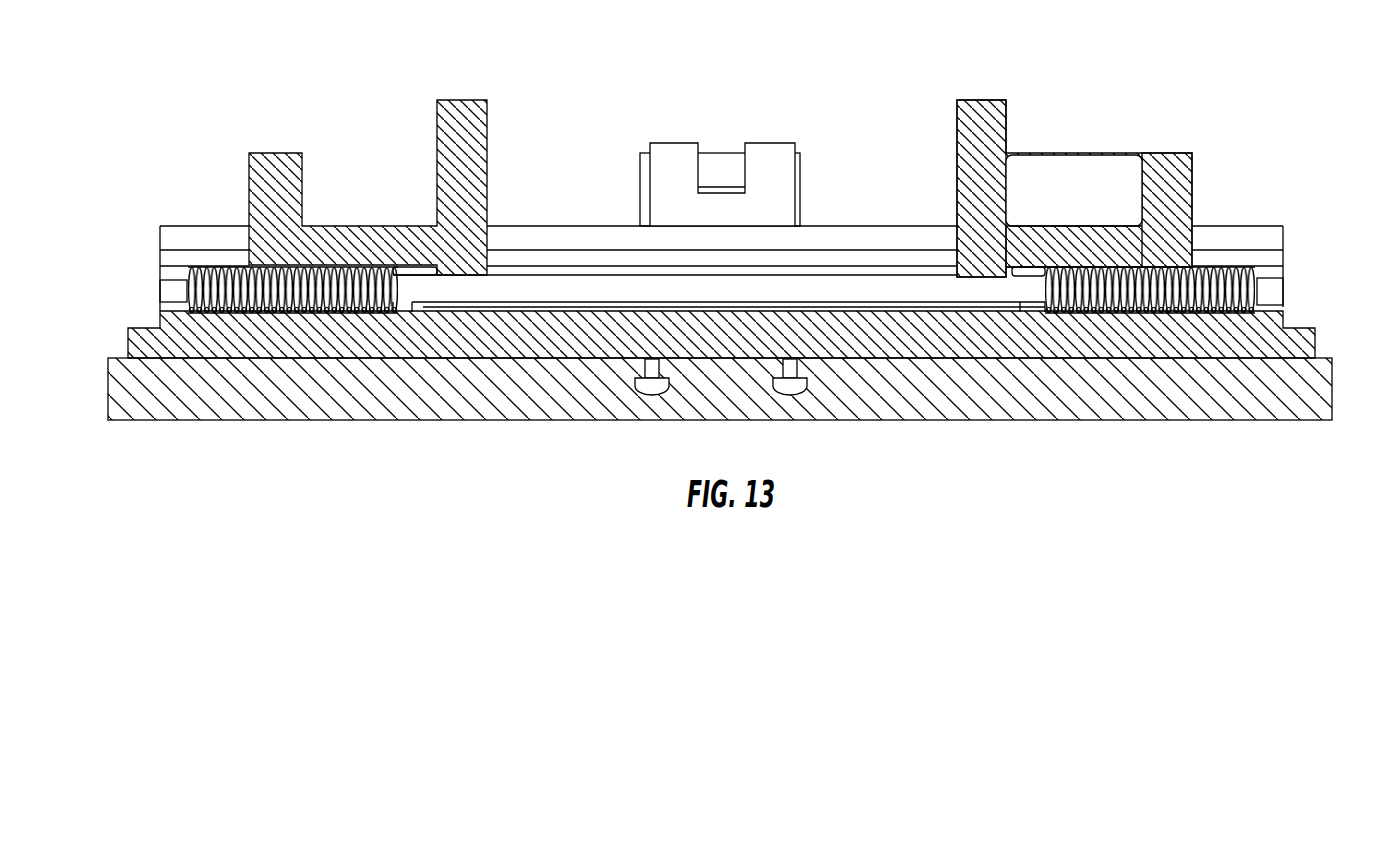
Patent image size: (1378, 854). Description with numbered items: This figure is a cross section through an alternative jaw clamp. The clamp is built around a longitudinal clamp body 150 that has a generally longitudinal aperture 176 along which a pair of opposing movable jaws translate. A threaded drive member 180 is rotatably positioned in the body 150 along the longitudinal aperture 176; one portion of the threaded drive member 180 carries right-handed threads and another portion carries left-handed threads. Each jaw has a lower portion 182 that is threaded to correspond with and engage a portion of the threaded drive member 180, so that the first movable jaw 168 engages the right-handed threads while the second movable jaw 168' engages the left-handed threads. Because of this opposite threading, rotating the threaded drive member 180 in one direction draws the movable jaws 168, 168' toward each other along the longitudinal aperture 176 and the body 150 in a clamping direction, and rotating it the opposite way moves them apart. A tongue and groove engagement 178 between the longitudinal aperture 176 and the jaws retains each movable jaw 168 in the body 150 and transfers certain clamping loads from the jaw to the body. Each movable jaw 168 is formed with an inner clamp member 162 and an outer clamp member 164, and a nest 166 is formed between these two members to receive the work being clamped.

The clamp body 150 is at (300, 340).
The inner clamp member 162 is at (957, 127).
The outer clamp member 164 is at (1165, 162).
The nest 166 is at (1082, 153).
The movable jaw 168 is at (996, 149).
The second movable jaw 168' is at (408, 176).
The longitudinal aperture 176 is at (1270, 240).
The tongue and groove engagement 178 is at (1228, 255).
The threaded drive member 180 is at (1120, 315).
The lower portion 182 is at (1063, 247).